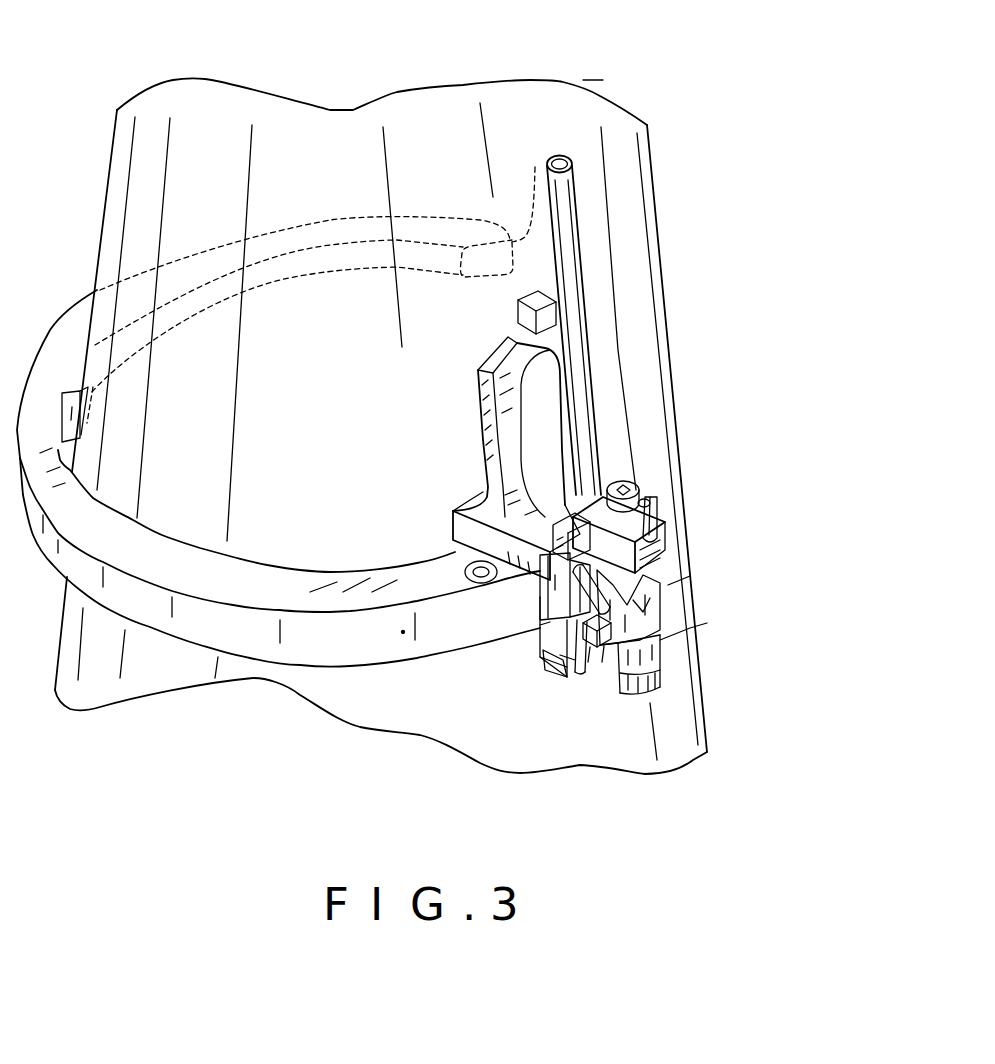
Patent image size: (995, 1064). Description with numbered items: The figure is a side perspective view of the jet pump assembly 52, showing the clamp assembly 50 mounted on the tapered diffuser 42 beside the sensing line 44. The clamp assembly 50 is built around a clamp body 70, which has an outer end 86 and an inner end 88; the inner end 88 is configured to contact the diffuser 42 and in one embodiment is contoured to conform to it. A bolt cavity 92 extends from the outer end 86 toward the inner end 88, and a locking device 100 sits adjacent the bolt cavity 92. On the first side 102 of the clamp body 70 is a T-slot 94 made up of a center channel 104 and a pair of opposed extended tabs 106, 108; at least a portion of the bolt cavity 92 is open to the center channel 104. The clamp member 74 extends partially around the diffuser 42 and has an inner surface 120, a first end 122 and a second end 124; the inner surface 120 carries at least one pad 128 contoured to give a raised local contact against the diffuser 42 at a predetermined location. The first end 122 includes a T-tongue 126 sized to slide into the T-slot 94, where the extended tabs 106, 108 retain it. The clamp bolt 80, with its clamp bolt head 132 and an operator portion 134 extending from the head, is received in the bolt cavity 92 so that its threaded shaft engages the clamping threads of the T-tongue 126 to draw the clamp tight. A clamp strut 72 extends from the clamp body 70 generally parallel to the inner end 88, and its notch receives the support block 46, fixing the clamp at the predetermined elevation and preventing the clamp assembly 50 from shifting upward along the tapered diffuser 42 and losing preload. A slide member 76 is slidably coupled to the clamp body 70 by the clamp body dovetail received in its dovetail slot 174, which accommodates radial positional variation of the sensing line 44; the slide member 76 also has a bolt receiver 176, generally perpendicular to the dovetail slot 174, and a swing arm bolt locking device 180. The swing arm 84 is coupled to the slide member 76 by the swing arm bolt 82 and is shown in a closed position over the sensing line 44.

The diffuser 42 is at (623, 147).
The sensing line 44 is at (573, 267).
The support block 46 is at (533, 303).
The clamp assembly 50 is at (708, 547).
The jet pump assembly 52 is at (593, 76).
The clamp body 70 is at (591, 665).
The clamp strut 72 is at (483, 442).
The clamp member 74 is at (400, 636).
The slide member 76 is at (648, 580).
The clamp bolt 80 is at (602, 670).
The swing arm bolt 82 is at (630, 470).
The swing arm 84 is at (660, 693).
The outer end 86 is at (563, 602).
The inner end 88 is at (447, 522).
The bolt cavity 92 is at (581, 677).
The T-slot 94 is at (557, 667).
The locking device 100 is at (618, 580).
The first side 102 is at (463, 545).
The center channel 104 is at (570, 660).
The extended tab 106 is at (568, 665).
The extended tab 108 is at (530, 600).
The inner surface 120 is at (363, 233).
The first end 122 is at (520, 643).
The second end 124 is at (535, 167).
The T-tongue 126 is at (547, 625).
The pad 128 is at (66, 393).
The clamp bolt head 132 is at (560, 517).
The operator portion 134 is at (620, 648).
The dovetail slot 174 is at (643, 607).
The bolt receiver 176 is at (648, 497).
The swing arm bolt locking device 180 is at (667, 505).